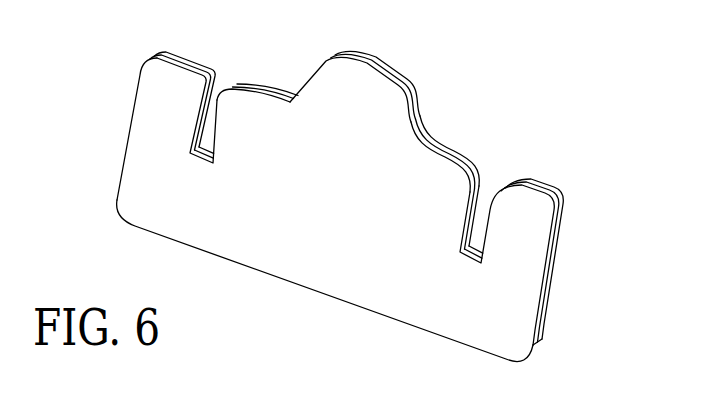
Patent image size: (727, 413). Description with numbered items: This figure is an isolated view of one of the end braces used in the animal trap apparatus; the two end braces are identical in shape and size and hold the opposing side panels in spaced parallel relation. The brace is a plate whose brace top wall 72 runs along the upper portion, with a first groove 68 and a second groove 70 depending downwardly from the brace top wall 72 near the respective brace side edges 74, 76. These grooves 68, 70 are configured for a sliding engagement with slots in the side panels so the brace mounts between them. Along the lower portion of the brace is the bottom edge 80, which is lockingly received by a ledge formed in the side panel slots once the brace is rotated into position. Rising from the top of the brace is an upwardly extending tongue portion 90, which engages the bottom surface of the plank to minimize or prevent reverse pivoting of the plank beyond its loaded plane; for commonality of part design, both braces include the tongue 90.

The first groove 68 is at (212, 92).
The second groove 70 is at (485, 192).
The brace top wall 72 is at (265, 83).
The first brace side edge 74 is at (131, 113).
The second brace side edge 76 is at (557, 267).
The bottom edge 80 is at (352, 305).
The tongue portion 90 is at (370, 62).